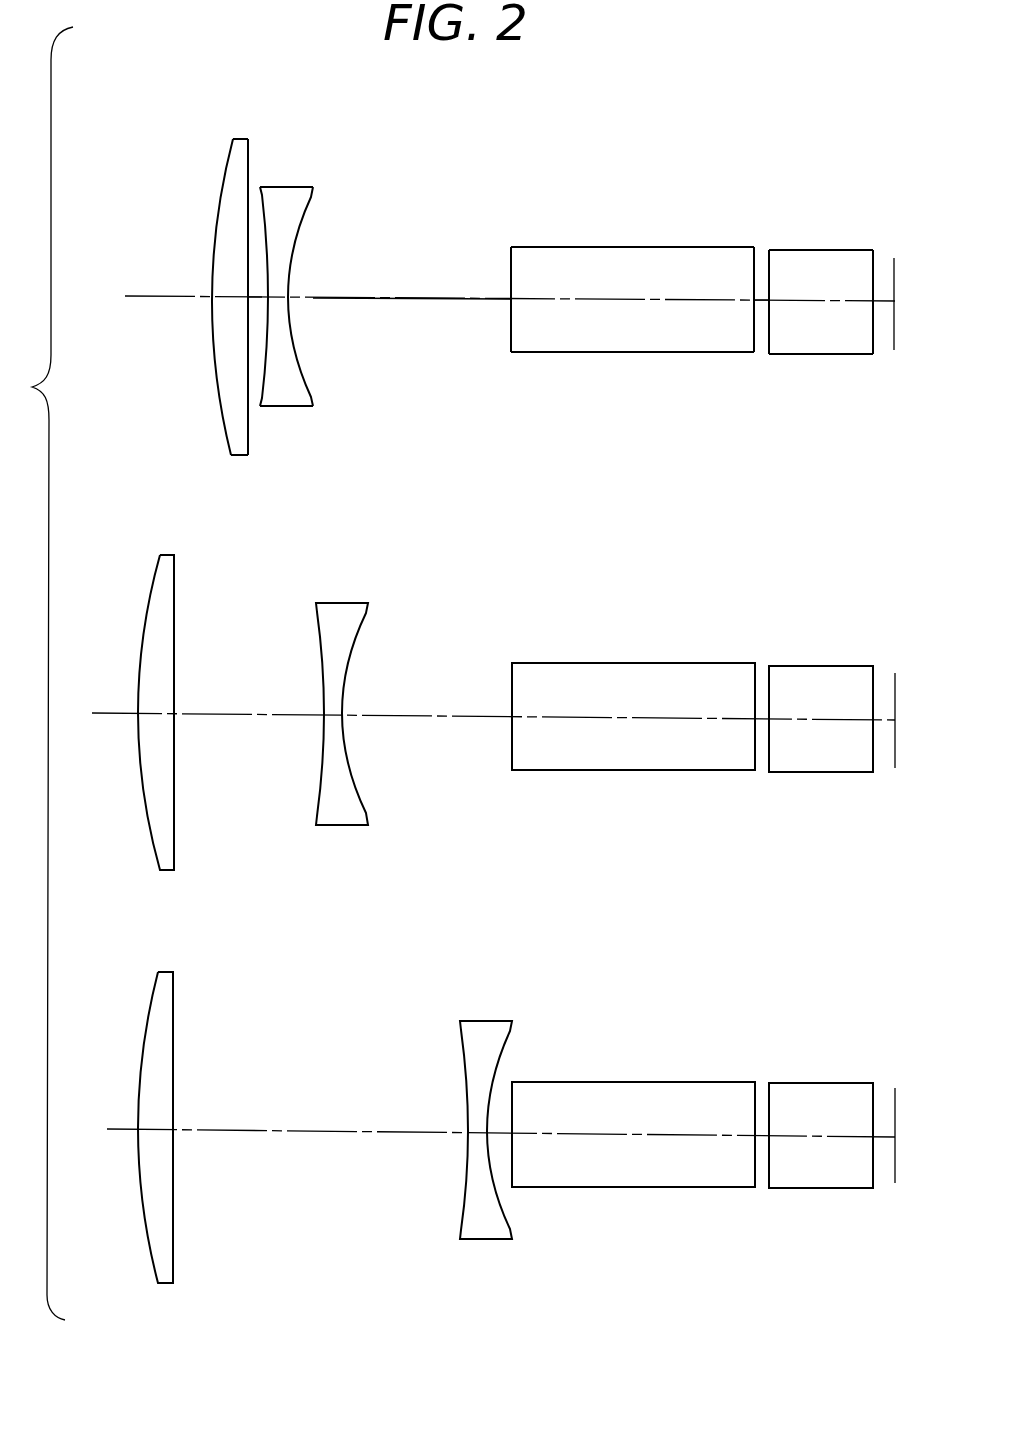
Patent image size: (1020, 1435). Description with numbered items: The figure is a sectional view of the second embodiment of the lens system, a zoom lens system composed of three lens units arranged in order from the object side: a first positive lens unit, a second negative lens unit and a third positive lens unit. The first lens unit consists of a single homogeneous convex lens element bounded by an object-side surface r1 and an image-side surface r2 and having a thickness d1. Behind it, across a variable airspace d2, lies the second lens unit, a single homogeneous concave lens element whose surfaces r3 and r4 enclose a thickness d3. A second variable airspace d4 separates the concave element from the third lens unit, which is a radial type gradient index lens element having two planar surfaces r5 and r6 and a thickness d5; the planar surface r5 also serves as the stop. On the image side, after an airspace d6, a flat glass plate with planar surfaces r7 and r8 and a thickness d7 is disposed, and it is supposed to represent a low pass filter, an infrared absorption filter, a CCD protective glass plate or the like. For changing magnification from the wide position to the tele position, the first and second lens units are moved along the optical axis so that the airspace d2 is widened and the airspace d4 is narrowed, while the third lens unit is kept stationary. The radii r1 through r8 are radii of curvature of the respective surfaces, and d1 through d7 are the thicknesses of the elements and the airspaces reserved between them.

The radius of curvature of object-side surface of first lens element r1 is at (226, 174).
The radius of curvature of image-side surface of first lens element r2 is at (248, 177).
The radius of curvature of object-side surface of second lens element r3 is at (265, 214).
The radius of curvature of image-side surface of second lens element r4 is at (308, 215).
The radius of curvature of object-side surface of gradient index lens element (stop) r5 is at (511, 255).
The radius of curvature of image-side surface of gradient index lens element r6 is at (754, 263).
The radius of curvature of object-side surface of flat glass plate r7 is at (769, 262).
The radius of curvature of image-side surface of flat glass plate r8 is at (873, 265).
The thickness of first lens element d1 is at (228, 298).
The airspace between first and second lens units d2 is at (260, 298).
The thickness of second lens element d3 is at (280, 298).
The airspace between second and third lens units d4 is at (422, 302).
The thickness of gradient index lens element d5 is at (618, 303).
The airspace between gradient index lens element and flat glass plate d6 is at (761, 303).
The thickness of flat glass plate d7 is at (822, 303).